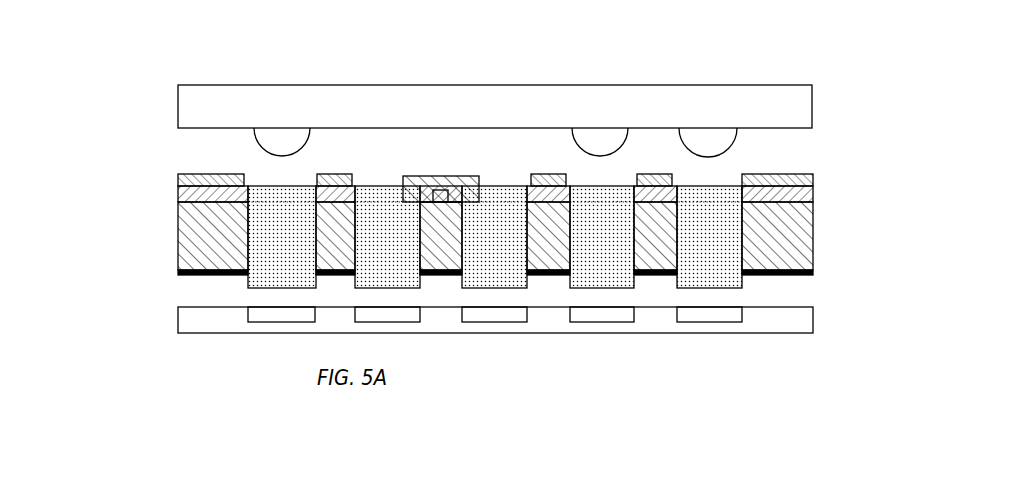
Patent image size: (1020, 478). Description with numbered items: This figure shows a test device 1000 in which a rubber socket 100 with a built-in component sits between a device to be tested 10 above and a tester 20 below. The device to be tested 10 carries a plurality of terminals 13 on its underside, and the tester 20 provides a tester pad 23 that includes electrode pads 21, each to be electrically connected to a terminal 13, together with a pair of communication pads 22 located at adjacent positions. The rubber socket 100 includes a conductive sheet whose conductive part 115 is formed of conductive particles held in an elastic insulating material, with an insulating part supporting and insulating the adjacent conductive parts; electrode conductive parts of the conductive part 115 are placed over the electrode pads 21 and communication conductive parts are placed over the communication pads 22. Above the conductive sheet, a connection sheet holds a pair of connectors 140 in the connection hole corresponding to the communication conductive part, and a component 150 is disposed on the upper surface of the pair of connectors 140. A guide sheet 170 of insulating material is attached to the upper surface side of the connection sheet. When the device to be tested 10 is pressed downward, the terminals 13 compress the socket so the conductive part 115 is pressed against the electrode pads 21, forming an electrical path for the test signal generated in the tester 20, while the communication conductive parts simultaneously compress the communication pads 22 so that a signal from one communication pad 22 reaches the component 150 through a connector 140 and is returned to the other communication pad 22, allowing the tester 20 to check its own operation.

The test device 1000 is at (96, 77).
The device to be tested 10 is at (544, 89).
The terminal 13 is at (710, 142).
The rubber socket 100 is at (484, 149).
The conductive part 115 is at (722, 238).
The guide sheet 170 is at (813, 178).
The connector 140 is at (423, 175).
The component 150 is at (462, 175).
The tester 20 is at (545, 379).
The electrode pad 21 is at (705, 358).
The communication pad 22 is at (390, 322).
The tester pad 23 is at (495, 379).